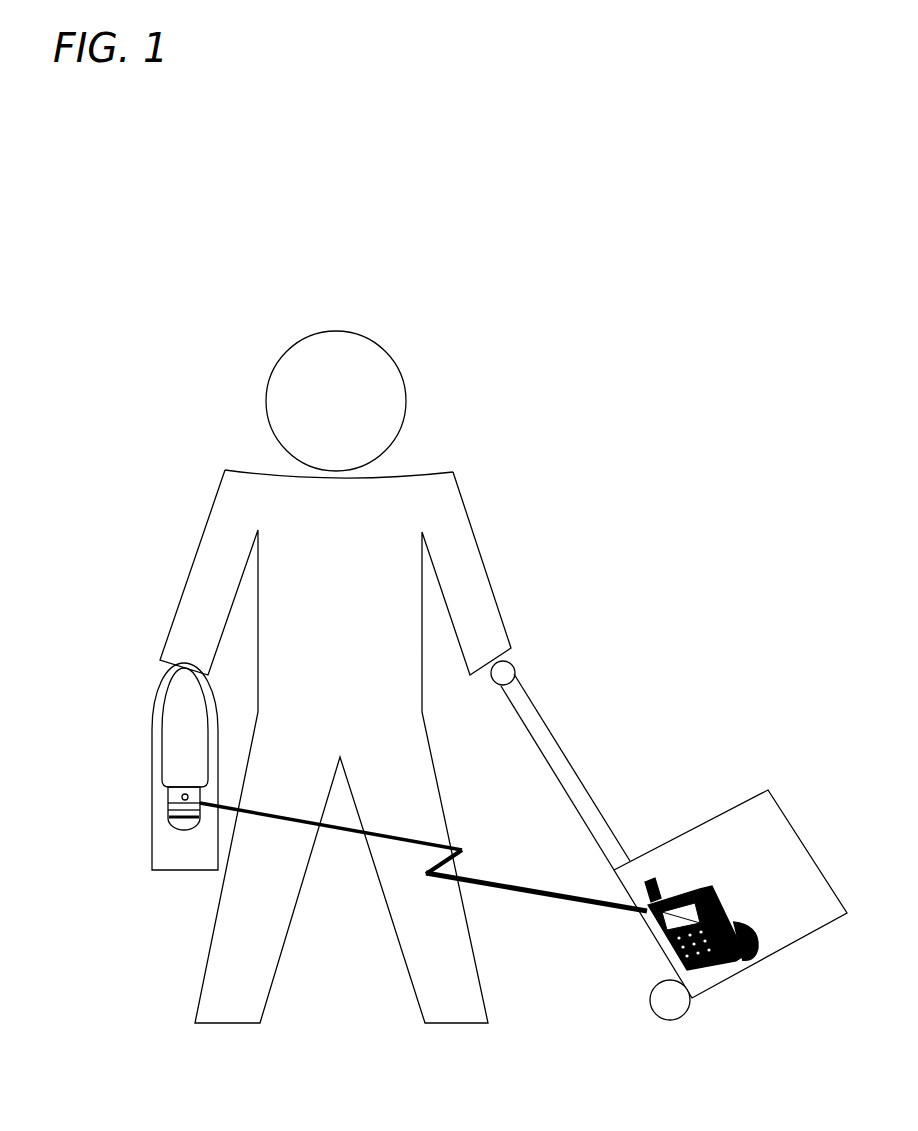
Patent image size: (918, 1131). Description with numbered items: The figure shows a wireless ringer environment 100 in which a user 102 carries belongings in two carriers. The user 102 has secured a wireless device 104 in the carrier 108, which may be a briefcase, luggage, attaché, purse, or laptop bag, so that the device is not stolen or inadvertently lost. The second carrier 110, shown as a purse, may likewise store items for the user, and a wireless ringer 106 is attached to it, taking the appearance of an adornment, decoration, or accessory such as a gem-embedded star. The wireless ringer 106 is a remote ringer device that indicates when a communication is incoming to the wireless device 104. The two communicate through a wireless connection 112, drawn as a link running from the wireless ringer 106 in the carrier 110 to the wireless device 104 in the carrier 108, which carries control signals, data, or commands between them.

The wireless ringer environment 100 is at (155, 294).
The user 102 is at (458, 470).
The wireless device 104 is at (727, 963).
The wireless ringer 106 is at (175, 797).
The carrier 108 is at (769, 789).
The carrier 110 is at (158, 763).
The wireless connection 112 is at (423, 857).